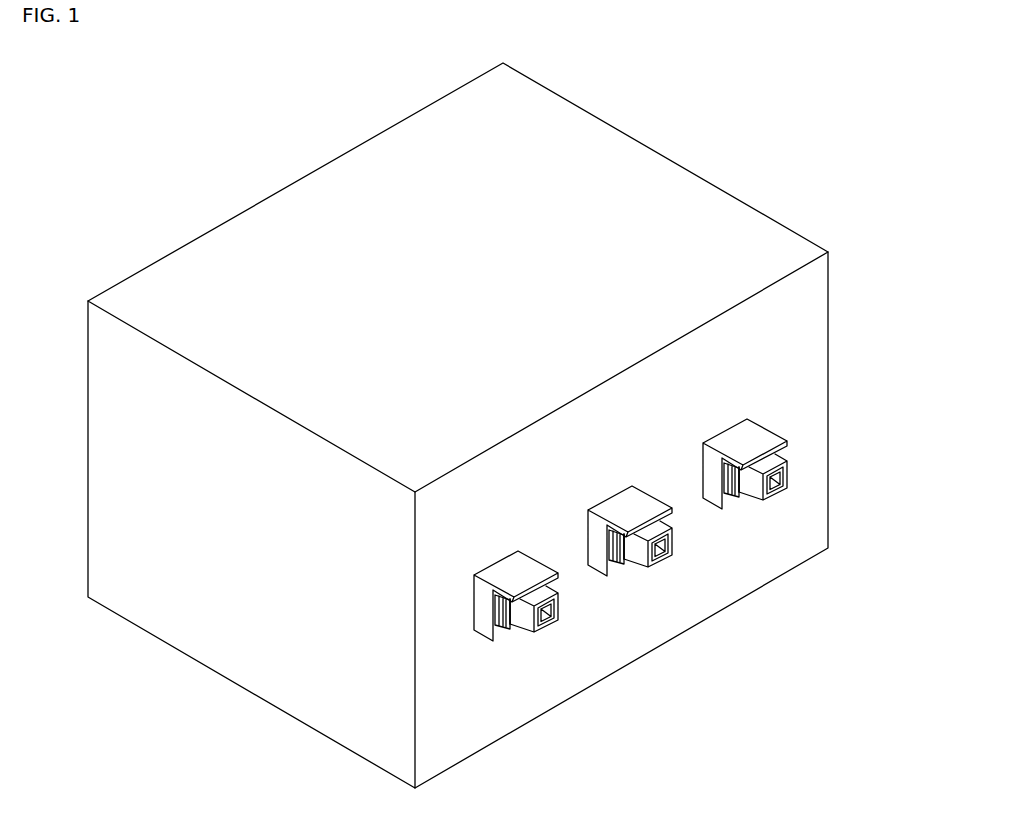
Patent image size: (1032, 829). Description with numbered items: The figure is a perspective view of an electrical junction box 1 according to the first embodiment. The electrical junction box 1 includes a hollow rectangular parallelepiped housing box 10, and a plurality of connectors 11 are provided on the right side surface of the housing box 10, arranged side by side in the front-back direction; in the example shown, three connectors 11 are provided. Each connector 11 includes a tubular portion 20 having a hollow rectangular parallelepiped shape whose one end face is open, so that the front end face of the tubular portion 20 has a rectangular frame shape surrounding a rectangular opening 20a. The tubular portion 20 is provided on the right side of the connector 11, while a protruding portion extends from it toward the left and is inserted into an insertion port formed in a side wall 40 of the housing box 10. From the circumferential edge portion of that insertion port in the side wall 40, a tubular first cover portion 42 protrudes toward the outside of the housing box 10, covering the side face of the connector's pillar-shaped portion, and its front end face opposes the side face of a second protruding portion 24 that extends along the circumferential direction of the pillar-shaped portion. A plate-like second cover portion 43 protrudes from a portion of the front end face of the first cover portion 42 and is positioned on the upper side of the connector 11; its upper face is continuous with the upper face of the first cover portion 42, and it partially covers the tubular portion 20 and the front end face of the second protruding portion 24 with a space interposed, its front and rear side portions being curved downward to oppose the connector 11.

The electrical junction box 1 is at (197, 102).
The housing box 10 is at (690, 150).
The side wall 40 is at (810, 307).
The second cover portion 43 is at (508, 565).
The first cover portion 42 is at (480, 638).
The tubular portion 20 is at (523, 627).
The rectangular opening 20a is at (533, 628).
The connector 11 is at (547, 633).
The second protruding portion 24 is at (510, 637).